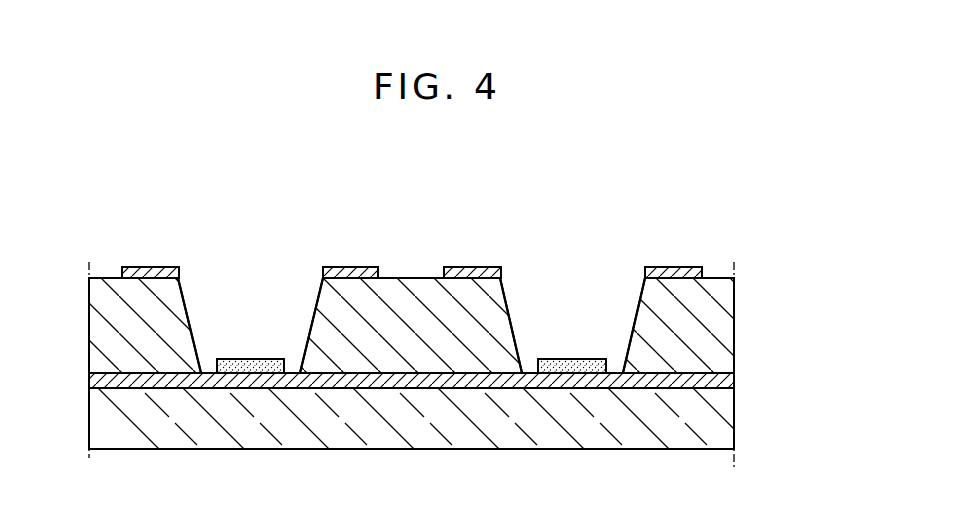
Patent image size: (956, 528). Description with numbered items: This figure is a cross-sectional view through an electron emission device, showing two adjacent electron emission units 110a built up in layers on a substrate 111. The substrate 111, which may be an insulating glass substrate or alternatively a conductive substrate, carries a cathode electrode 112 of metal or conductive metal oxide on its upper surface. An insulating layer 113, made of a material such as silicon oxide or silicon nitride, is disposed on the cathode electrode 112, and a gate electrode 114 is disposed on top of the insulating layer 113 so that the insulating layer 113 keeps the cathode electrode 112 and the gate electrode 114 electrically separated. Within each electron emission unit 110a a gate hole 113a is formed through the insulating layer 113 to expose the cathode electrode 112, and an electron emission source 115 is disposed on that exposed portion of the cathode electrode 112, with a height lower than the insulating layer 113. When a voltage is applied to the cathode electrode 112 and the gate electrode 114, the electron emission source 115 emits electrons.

The electron emission unit 110a is at (105, 466).
The substrate 111 is at (718, 420).
The cathode electrode 112 is at (720, 383).
The insulating layer 113 is at (718, 327).
The gate hole 113a is at (313, 317).
The gate electrode 114 is at (348, 268).
The electron emission source 115 is at (253, 359).